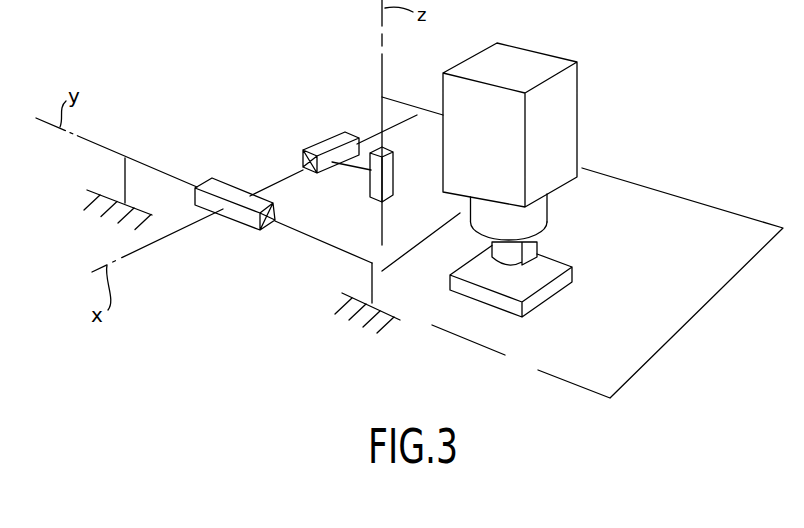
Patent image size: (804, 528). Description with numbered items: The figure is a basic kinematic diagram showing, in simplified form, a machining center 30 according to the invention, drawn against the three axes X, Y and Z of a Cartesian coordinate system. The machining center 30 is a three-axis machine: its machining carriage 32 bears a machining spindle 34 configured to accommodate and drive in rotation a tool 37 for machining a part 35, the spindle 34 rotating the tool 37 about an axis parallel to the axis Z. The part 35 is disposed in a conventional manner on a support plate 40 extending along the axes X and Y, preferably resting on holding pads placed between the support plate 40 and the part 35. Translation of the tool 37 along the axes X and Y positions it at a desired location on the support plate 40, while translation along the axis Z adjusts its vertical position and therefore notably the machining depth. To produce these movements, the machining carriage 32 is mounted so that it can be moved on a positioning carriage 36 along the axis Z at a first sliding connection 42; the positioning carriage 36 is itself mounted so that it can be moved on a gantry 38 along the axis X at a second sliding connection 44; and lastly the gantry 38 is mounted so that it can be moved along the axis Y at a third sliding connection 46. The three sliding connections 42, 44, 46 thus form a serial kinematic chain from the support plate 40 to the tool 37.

The machining center 30 is at (577, 292).
The machining carriage 32 is at (563, 107).
The machining spindle 34 is at (530, 212).
The part 35 is at (517, 288).
The positioning carriage 36 is at (340, 135).
The tool 37 is at (537, 247).
The gantry 38 is at (222, 176).
The support plate 40 is at (680, 197).
The first sliding connection 42 is at (400, 157).
The second sliding connection 44 is at (303, 150).
The third sliding connection 46 is at (241, 211).